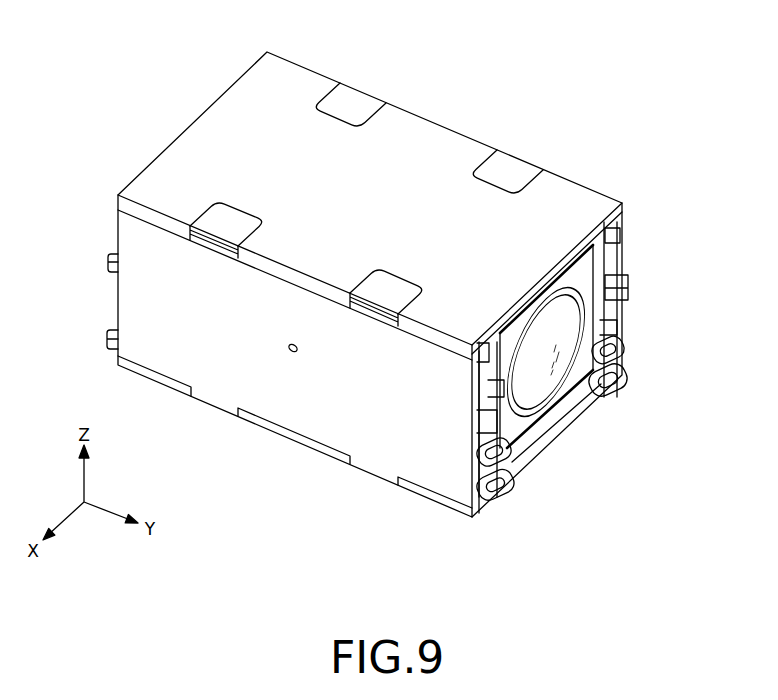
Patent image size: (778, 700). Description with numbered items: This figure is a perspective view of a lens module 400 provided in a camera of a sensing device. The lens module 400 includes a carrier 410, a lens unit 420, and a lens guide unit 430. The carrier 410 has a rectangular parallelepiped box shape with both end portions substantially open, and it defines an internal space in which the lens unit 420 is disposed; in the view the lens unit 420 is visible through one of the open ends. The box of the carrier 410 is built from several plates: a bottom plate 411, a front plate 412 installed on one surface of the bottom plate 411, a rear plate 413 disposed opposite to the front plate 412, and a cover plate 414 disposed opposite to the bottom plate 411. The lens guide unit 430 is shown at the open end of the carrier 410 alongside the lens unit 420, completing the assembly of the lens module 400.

The lens module 400 is at (411, 34).
The carrier 410 is at (740, 423).
The bottom plate 411 is at (600, 390).
The front plate 412 is at (507, 450).
The rear plate 413 is at (620, 345).
The cover plate 414 is at (547, 418).
The lens unit 420 is at (587, 265).
The lens guide unit 430 is at (625, 330).